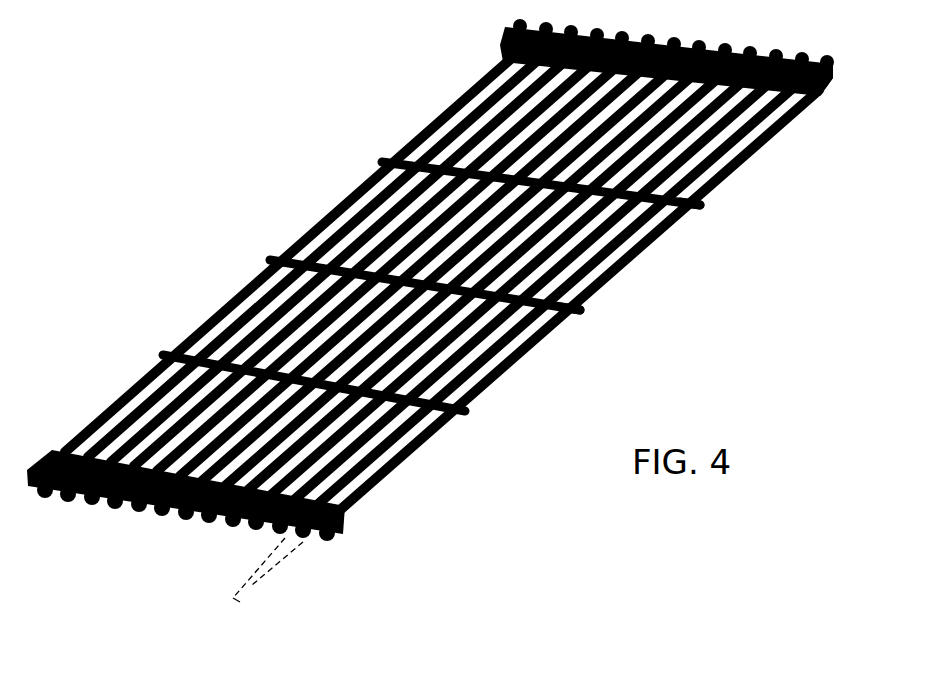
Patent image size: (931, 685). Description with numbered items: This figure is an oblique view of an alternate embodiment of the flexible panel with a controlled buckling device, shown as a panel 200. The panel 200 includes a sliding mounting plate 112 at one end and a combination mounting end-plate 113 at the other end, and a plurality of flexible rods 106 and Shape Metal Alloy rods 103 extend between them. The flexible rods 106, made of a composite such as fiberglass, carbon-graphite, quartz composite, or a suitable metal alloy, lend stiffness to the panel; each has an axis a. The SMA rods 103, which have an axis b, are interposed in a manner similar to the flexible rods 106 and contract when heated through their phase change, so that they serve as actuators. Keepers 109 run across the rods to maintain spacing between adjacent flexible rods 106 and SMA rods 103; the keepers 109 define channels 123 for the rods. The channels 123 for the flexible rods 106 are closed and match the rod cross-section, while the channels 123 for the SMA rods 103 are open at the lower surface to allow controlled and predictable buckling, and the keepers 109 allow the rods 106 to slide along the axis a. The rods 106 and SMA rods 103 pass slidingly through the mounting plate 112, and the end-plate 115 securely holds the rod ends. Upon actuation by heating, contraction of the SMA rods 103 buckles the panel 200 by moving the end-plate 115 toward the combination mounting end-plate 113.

The panel 200 is at (238, 192).
The SMA rods 103 is at (193, 383).
The flexible rods 106 is at (467, 353).
The keepers 109 is at (690, 212).
The sliding mounting plate 112 is at (500, 44).
The combination mounting end-plate 113 is at (225, 525).
The end-plate 115 is at (745, 55).
The channels 123 is at (557, 317).
The axis a is at (246, 573).
The axis b is at (240, 602).